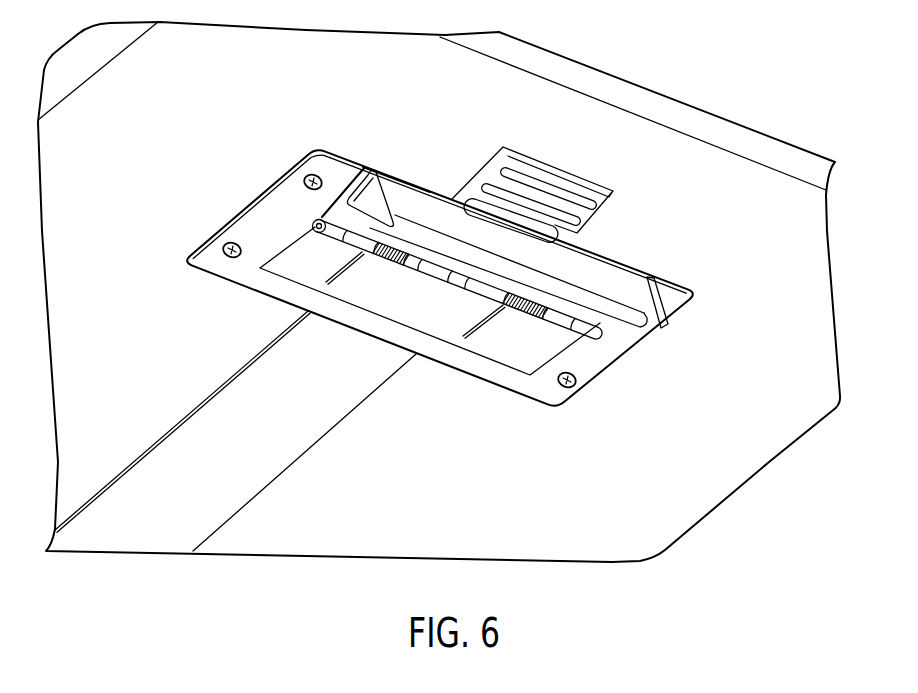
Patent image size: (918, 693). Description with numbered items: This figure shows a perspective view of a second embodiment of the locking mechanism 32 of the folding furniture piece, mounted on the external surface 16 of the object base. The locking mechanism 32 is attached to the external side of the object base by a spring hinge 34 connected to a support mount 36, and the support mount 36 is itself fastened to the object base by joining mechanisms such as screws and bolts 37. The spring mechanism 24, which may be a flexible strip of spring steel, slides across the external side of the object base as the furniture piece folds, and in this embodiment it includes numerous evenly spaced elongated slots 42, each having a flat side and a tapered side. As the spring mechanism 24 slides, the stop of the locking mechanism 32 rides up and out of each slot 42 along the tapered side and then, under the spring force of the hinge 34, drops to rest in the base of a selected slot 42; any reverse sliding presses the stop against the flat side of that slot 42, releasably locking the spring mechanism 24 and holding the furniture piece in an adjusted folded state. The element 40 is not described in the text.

The external surface 16 is at (755, 180).
The spring mechanism 24 is at (313, 444).
The locking mechanism 32 is at (300, 114).
The spring hinge 34 is at (262, 218).
The support mount 36 is at (417, 266).
The screws and bolts 37 is at (304, 177).
The end tab 40 is at (660, 326).
The elongated slots 42 is at (485, 178).